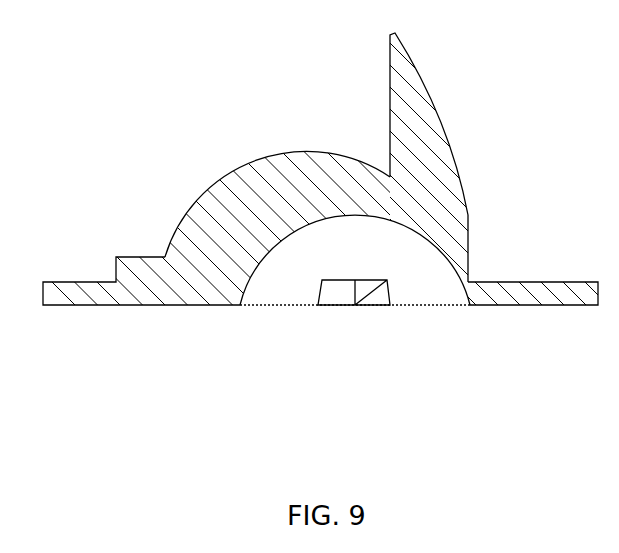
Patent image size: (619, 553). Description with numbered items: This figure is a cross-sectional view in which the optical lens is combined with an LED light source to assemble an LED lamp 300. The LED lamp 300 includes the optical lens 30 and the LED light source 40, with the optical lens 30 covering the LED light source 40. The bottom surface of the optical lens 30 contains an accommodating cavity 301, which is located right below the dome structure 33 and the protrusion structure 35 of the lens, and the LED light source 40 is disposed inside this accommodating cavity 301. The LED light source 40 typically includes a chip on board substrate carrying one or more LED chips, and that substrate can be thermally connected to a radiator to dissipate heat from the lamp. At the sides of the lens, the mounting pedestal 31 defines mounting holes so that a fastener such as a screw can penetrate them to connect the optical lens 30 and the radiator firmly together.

The optical lens 30 is at (511, 282).
The mounting pedestal 31 is at (68, 283).
The dome structure 33 is at (276, 165).
The protrusion structure 35 is at (412, 97).
The LED light source 40 is at (336, 295).
The LED lamp 300 is at (309, 207).
The accommodating cavity 301 is at (275, 270).